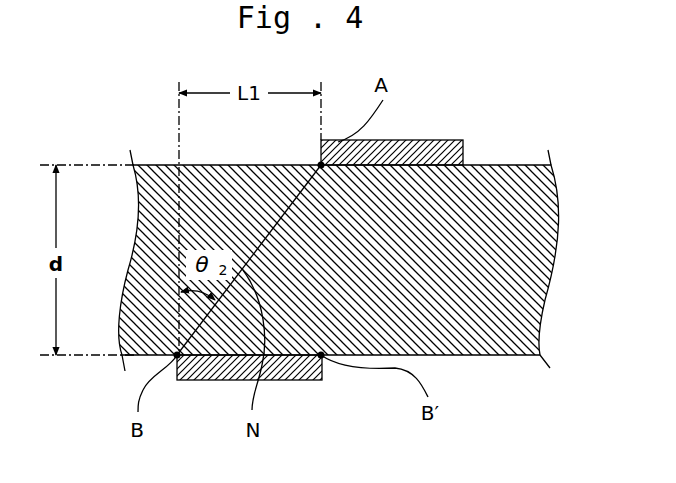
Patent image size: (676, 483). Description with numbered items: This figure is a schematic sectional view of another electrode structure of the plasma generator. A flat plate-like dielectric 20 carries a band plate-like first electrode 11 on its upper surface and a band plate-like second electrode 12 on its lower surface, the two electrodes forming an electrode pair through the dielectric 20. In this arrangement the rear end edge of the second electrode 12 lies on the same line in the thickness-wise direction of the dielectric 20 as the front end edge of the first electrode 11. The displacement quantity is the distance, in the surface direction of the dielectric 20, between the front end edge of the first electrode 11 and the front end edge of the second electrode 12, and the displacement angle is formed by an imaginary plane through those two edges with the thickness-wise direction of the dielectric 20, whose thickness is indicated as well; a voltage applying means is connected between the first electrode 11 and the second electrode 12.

The first electrode 11 is at (457, 142).
The second electrode 12 is at (313, 377).
The dielectric 20 is at (452, 330).